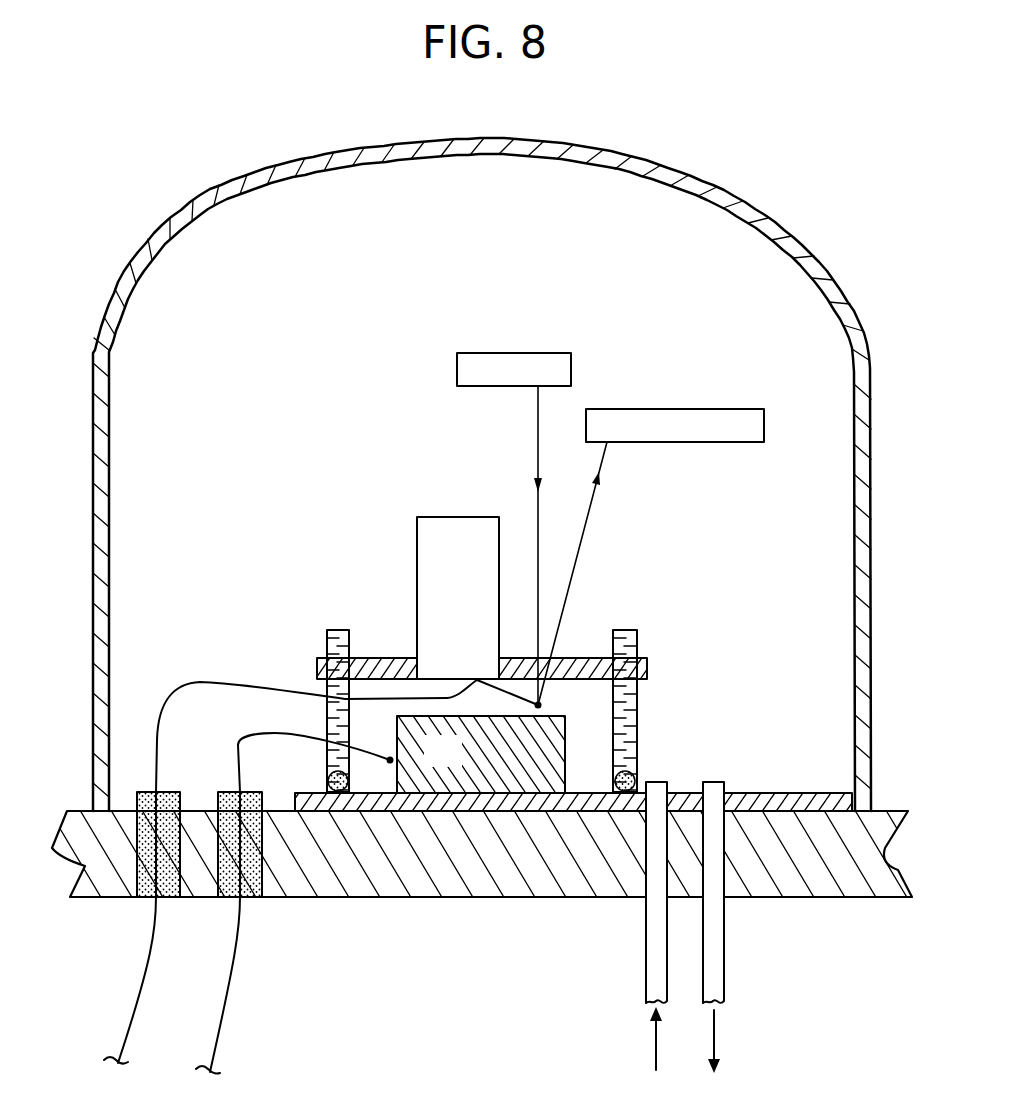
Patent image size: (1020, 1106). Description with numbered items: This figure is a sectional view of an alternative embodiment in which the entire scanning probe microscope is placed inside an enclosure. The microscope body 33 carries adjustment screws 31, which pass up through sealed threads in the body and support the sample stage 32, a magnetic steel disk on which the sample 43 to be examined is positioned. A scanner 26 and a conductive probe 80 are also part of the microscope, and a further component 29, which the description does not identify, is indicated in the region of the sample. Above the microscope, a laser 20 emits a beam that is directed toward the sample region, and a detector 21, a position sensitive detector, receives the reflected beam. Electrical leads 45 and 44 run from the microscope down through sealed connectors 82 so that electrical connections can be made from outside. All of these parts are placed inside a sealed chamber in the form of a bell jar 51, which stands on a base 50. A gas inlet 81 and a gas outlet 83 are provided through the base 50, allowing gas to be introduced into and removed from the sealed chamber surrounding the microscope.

The laser 20 is at (512, 352).
The position sensitive detector 21 is at (686, 408).
The scanner 26 is at (455, 517).
The sample 29 is at (521, 700).
The adjustment screws 31 is at (340, 630).
The sample stage 32 is at (752, 793).
The microscope body 33 is at (397, 657).
The sample 43 is at (459, 763).
The electrical lead 44 is at (232, 990).
The electrical lead 45 is at (135, 990).
The base 50 is at (803, 875).
The bell jar 51 is at (858, 578).
The conductive probe 80 is at (542, 705).
The gas inlet 81 is at (645, 948).
The sealed connectors 82 is at (228, 790).
The outlet tube 83 is at (724, 962).